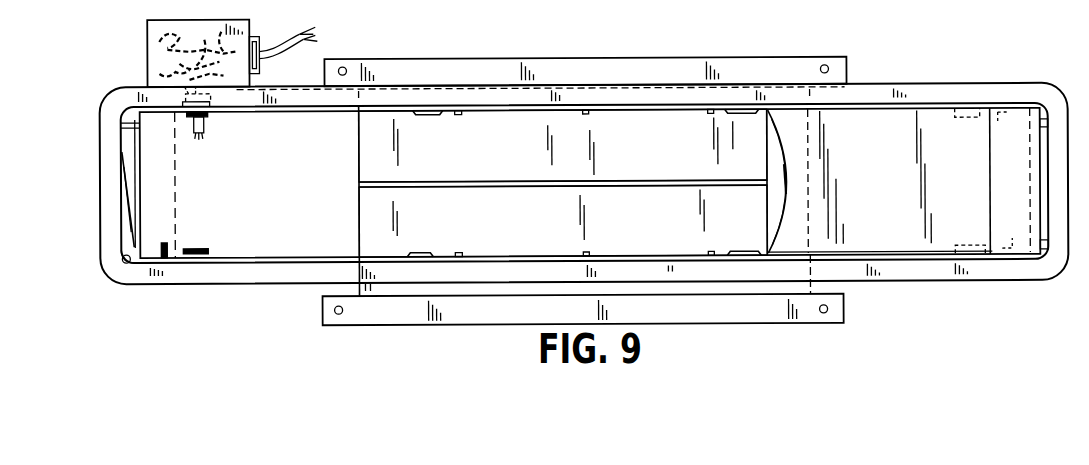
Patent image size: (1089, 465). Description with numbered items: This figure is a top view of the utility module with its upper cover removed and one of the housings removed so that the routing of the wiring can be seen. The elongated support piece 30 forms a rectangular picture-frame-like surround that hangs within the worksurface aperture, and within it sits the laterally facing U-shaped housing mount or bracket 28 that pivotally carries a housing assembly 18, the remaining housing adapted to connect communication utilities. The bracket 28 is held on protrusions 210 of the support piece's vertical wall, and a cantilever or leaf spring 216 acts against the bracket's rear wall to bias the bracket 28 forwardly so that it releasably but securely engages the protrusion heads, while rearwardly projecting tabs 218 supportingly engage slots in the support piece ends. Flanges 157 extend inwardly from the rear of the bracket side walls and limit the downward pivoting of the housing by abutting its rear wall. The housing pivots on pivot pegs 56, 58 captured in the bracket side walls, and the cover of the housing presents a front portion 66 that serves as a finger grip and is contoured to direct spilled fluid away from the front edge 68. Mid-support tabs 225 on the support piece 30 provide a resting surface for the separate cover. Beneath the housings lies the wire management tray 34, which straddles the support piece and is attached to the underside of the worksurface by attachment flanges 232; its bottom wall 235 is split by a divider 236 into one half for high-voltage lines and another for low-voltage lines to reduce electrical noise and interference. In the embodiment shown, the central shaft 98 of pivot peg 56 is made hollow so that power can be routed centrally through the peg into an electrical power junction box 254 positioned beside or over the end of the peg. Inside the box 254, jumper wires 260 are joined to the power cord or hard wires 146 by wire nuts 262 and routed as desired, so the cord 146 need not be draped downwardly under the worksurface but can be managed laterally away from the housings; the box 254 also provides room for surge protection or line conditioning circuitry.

The housing assembly 18 is at (890, 147).
The housing mount or bracket 28 is at (335, 111).
The support piece 30 is at (240, 278).
The wire management tray 34 is at (393, 60).
The pivot peg 56 is at (210, 113).
The pivot peg 58 is at (200, 247).
The front portion 66 is at (777, 150).
The front edge 68 is at (768, 226).
The central shaft 98 is at (237, 98).
The power cord or hard wires 146 is at (288, 46).
The flange 157 is at (145, 270).
The protrusion 210 is at (420, 113).
The cantilever or leaf spring 216 is at (123, 220).
The rearwardly projecting tab 218 is at (123, 257).
The mid-support tab 225 is at (588, 109).
The attachment flange 232 is at (800, 70).
The bottom wall 235 is at (357, 214).
The divider 236 is at (672, 179).
The electrical power junction box 254 is at (153, 44).
The jumper wires 260 is at (205, 131).
The wire nuts 262 is at (185, 28).